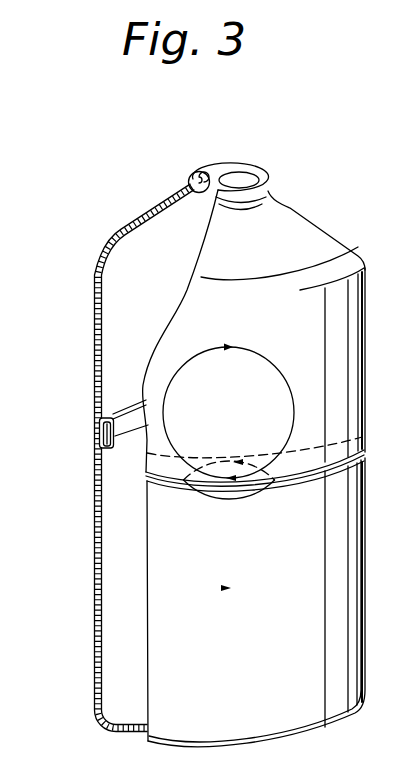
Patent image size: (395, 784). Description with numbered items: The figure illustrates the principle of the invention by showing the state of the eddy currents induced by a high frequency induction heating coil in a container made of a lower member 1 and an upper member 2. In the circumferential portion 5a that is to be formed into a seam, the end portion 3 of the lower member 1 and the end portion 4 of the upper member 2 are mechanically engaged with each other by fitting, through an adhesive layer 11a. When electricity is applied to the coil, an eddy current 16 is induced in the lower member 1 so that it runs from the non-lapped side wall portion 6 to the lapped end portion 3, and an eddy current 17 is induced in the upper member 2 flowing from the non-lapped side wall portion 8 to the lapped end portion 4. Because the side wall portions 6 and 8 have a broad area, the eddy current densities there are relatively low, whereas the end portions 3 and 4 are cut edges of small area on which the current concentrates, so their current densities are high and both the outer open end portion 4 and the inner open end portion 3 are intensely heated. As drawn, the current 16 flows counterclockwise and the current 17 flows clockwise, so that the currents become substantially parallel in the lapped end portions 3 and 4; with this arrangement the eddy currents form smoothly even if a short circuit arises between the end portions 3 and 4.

The lower member 1 is at (262, 662).
The upper member 2 is at (259, 331).
The end portion of lower member 3 is at (103, 450).
The end portion of upper member 4 is at (96, 405).
The circumferential portion 5a is at (100, 441).
The non-lapped side wall portion 6 is at (229, 522).
The non-lapped side wall portion 8 is at (228, 412).
The adhesive layer 11a is at (102, 432).
The eddy current 16 is at (288, 552).
The eddy current 17 is at (283, 377).